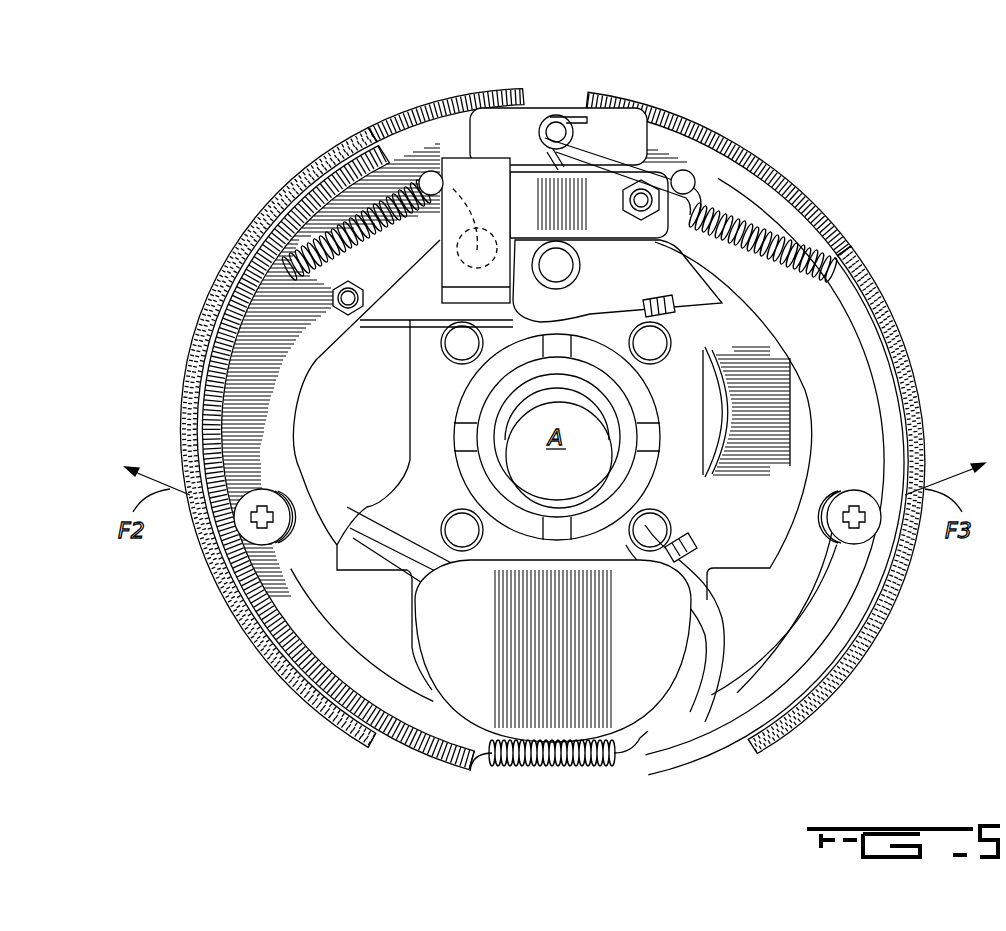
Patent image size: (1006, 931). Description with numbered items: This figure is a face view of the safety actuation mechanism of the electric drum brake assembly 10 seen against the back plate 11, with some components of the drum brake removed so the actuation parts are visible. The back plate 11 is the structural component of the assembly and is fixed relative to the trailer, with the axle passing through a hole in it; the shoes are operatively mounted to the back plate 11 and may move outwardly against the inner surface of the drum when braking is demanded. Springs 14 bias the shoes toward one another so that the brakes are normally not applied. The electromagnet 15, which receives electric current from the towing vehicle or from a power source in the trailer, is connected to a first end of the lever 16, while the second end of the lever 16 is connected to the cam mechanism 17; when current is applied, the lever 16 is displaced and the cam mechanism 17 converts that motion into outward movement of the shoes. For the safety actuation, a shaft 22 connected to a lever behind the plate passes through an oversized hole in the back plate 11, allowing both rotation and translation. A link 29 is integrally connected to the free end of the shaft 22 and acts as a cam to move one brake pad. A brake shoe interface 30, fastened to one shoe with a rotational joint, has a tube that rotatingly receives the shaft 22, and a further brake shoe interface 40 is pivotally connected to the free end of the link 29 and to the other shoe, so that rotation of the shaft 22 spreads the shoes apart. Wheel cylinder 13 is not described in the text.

The electric drum brake assembly 10 is at (258, 121).
The back plate 11 is at (343, 392).
The wheel cylinder 13 is at (557, 128).
The springs 14 is at (503, 767).
The electromagnet 15 is at (627, 663).
The lever 16 is at (757, 448).
The cam mechanism 17 is at (589, 251).
The shaft 22 is at (354, 130).
The link 29 is at (477, 180).
The brake shoe interface 30 is at (430, 284).
The further brake shoe interface 40 is at (587, 200).